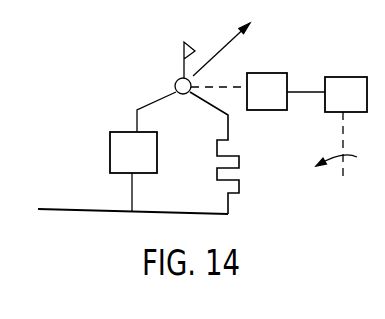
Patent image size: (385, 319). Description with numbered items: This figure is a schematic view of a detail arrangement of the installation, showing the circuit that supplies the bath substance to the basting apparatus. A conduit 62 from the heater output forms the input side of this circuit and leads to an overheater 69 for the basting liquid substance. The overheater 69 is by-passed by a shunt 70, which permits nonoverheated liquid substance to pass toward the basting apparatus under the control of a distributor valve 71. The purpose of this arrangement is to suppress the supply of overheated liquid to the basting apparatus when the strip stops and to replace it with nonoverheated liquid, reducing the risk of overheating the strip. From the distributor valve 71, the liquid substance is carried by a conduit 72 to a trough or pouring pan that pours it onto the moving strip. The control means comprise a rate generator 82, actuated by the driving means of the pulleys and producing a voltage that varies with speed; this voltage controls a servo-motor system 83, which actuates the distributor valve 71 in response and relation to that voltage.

The conduit 62 is at (133, 197).
The overheater 69 is at (143, 152).
The shunt 70 is at (235, 153).
The distributor valve 71 is at (175, 84).
The conduit 72 is at (242, 45).
The rate generator 82 is at (341, 126).
The servo-motor system 83 is at (258, 91).